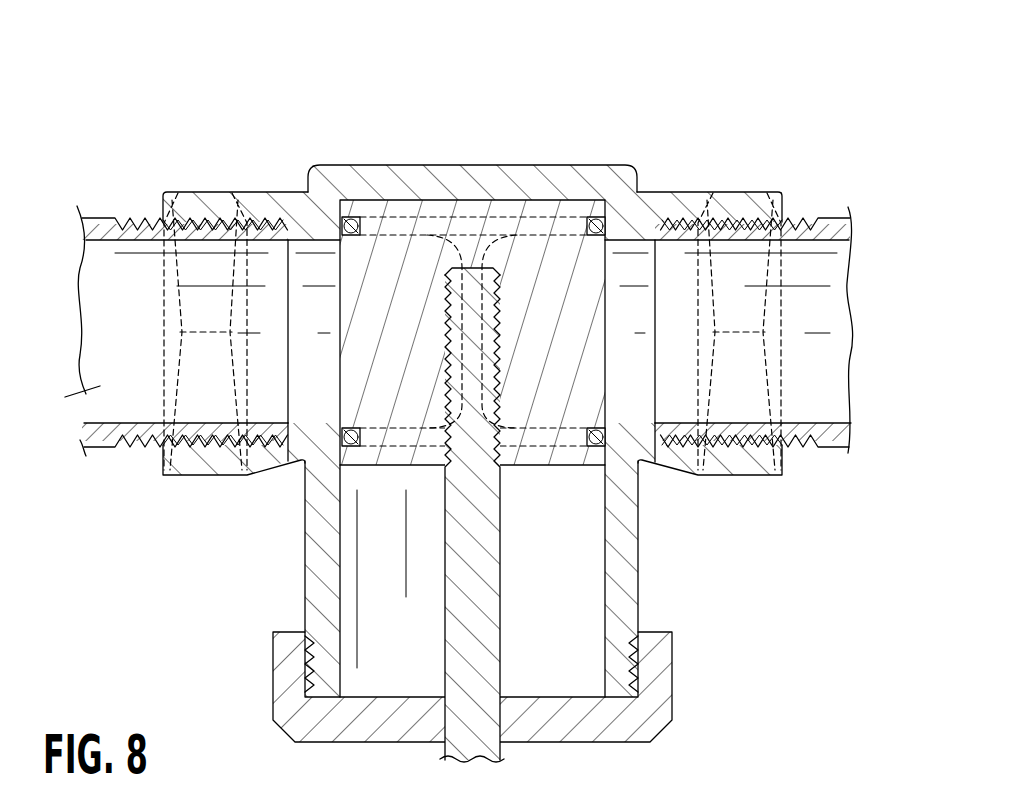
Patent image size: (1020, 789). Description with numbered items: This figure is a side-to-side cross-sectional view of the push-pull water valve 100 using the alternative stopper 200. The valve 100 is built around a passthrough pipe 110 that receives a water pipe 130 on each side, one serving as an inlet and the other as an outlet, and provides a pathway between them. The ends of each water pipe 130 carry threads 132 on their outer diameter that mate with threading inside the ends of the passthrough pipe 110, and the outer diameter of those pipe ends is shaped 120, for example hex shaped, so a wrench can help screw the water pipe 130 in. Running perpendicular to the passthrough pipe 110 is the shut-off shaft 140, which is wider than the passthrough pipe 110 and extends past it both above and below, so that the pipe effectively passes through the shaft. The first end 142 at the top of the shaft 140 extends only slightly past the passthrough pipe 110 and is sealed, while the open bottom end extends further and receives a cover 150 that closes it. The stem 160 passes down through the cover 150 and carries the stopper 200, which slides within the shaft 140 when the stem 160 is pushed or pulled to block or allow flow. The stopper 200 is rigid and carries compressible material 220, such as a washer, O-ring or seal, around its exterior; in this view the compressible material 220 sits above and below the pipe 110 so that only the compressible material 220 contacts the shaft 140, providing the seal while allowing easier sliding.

The push-pull water valve 100 is at (180, 120).
The passthrough pipe 110 is at (312, 262).
The shaped outer diameter 120 is at (205, 477).
The water pipe 130 is at (100, 386).
The threads 132 is at (137, 446).
The shut-off shaft 140 is at (628, 565).
The first end of the shaft 142 is at (372, 166).
The cover 150 is at (672, 673).
The stem 160 is at (490, 582).
The stopper 200 is at (540, 212).
The compressible material 220 is at (455, 230).